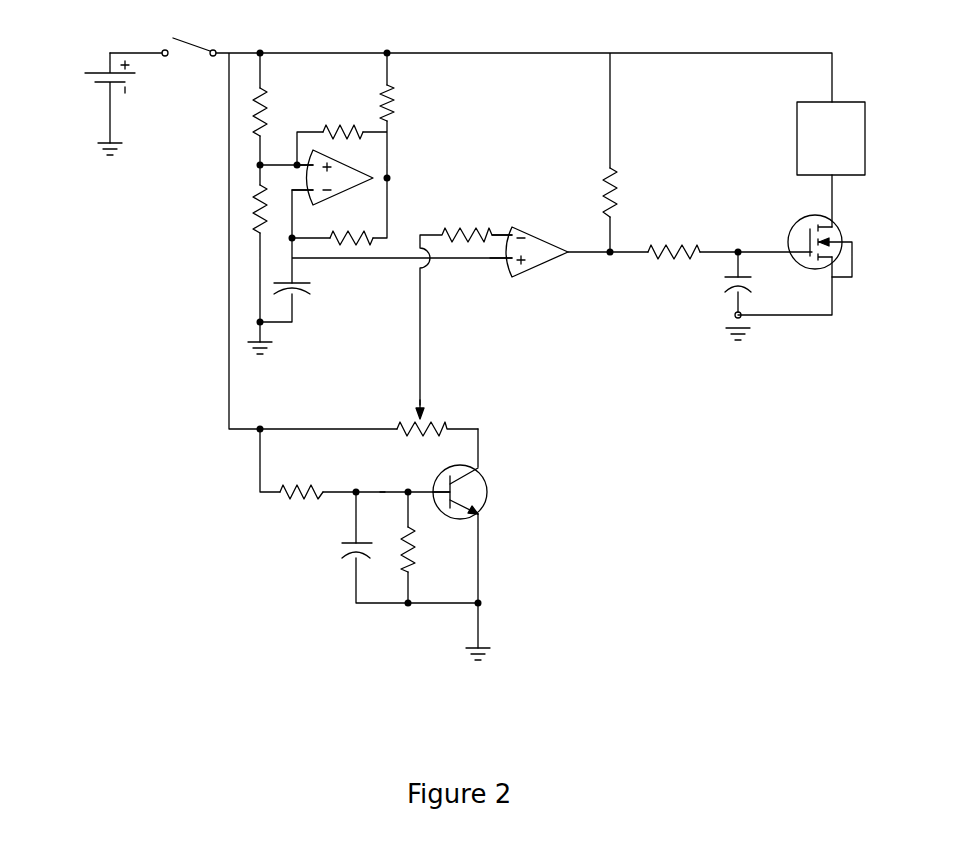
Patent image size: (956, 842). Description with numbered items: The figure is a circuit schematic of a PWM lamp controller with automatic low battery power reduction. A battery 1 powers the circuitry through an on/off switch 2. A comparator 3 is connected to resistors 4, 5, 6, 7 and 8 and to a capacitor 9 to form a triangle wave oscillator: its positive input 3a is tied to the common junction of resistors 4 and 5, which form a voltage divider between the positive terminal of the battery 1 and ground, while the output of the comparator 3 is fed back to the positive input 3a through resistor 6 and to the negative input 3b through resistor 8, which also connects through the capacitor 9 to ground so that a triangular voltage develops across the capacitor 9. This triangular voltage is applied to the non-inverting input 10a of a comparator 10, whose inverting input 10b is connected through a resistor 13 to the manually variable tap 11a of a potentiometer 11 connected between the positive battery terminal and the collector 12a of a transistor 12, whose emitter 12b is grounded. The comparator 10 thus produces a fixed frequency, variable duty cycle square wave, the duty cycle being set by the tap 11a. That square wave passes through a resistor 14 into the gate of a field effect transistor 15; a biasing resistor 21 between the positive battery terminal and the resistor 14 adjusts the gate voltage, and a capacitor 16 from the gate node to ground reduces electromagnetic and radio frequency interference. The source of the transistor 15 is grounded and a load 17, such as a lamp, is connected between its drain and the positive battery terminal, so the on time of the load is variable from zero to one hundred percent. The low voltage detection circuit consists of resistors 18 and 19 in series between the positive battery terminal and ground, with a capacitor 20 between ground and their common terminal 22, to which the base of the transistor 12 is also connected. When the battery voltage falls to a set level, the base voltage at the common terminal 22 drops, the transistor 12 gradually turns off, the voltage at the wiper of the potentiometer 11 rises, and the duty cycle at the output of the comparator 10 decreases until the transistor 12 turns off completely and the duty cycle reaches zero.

The battery 1 is at (100, 98).
The on/off switch 2 is at (189, 38).
The comparator 3 is at (346, 162).
The positive input 3a is at (311, 154).
The negative input 3b is at (307, 204).
The resistor 4 is at (251, 112).
The resistor 5 is at (251, 209).
The resistor 6 is at (343, 122).
The resistor 7 is at (400, 103).
The resistor 8 is at (351, 228).
The capacitor 9 is at (299, 291).
The comparator 10 is at (540, 235).
The non-inverting input 10a is at (500, 274).
The inverting input 10b is at (512, 219).
The potentiometer 11 is at (437, 443).
The manually variable tap 11a is at (421, 403).
The transistor 12 is at (475, 492).
The collector 12a is at (488, 466).
The emitter 12b is at (488, 521).
The resistor 13 is at (466, 304).
The resistor 14 is at (674, 240).
The Field Effect Transistor 15 is at (816, 238).
The capacitor 16 is at (723, 297).
The load 17 is at (797, 126).
The resistor 18 is at (301, 481).
The resistor 19 is at (423, 549).
The capacitor 20 is at (345, 553).
The biasing resistor 21 is at (628, 192).
The common terminal 22 is at (380, 491).